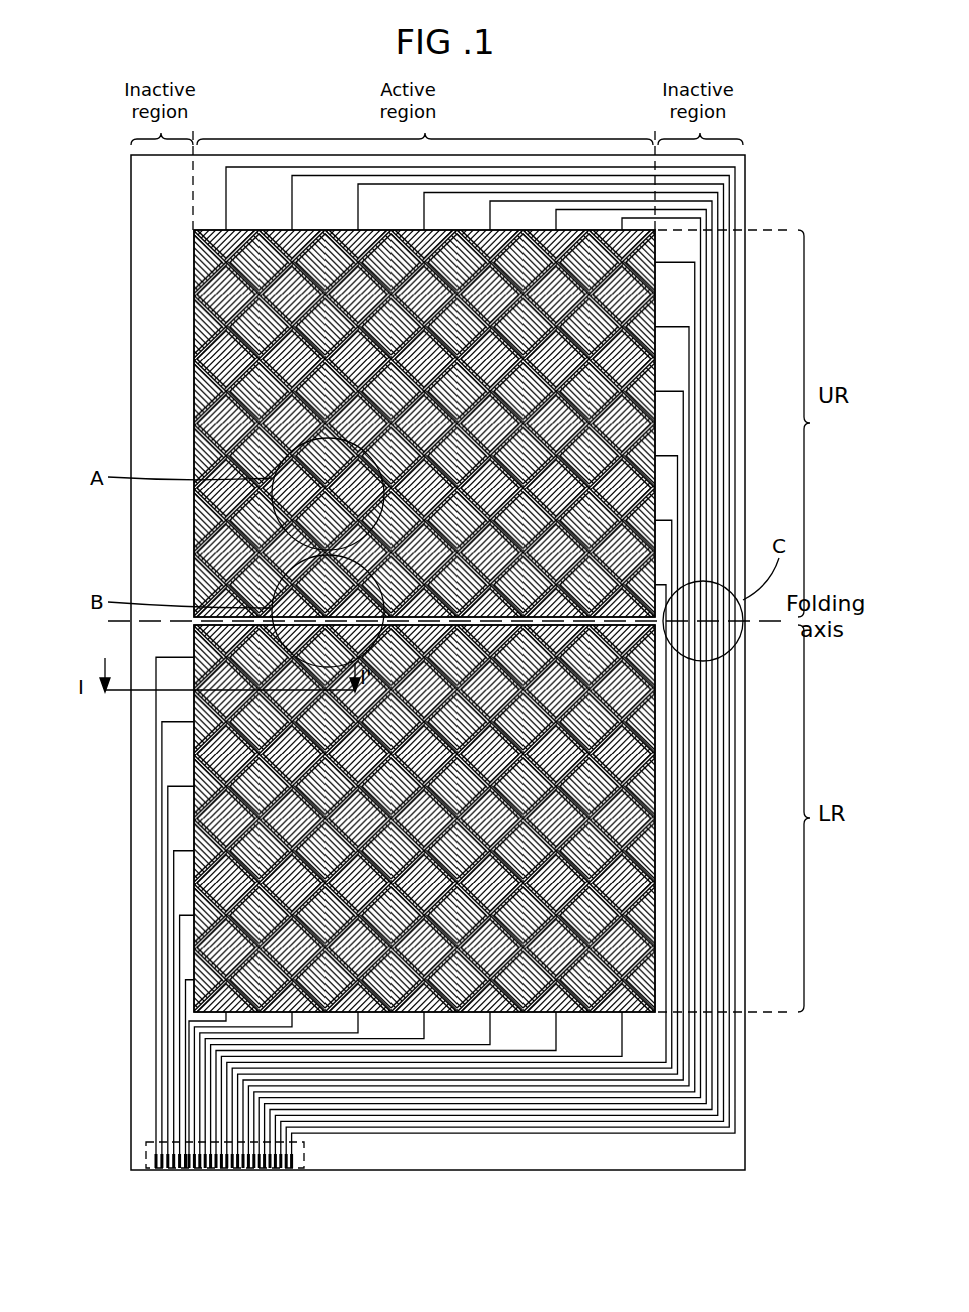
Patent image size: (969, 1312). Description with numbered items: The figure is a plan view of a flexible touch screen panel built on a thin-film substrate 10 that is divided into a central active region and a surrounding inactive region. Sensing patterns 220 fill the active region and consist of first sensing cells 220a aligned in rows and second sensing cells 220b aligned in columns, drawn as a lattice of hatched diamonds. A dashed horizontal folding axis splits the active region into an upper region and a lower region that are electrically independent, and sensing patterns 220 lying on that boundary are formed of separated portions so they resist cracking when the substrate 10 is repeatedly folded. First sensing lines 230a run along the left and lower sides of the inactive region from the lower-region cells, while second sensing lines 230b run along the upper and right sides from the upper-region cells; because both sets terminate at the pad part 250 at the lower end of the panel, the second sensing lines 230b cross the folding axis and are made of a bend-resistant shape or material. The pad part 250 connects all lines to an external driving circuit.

The thin-film substrate 10 is at (122, 177).
The sensing patterns 220 is at (344, 621).
The first sensing cells 220a is at (243, 253).
The second sensing cells 220b is at (220, 279).
The first sensing lines 230a is at (140, 750).
The second sensing lines 230b is at (724, 162).
The pad part 250 is at (298, 1148).